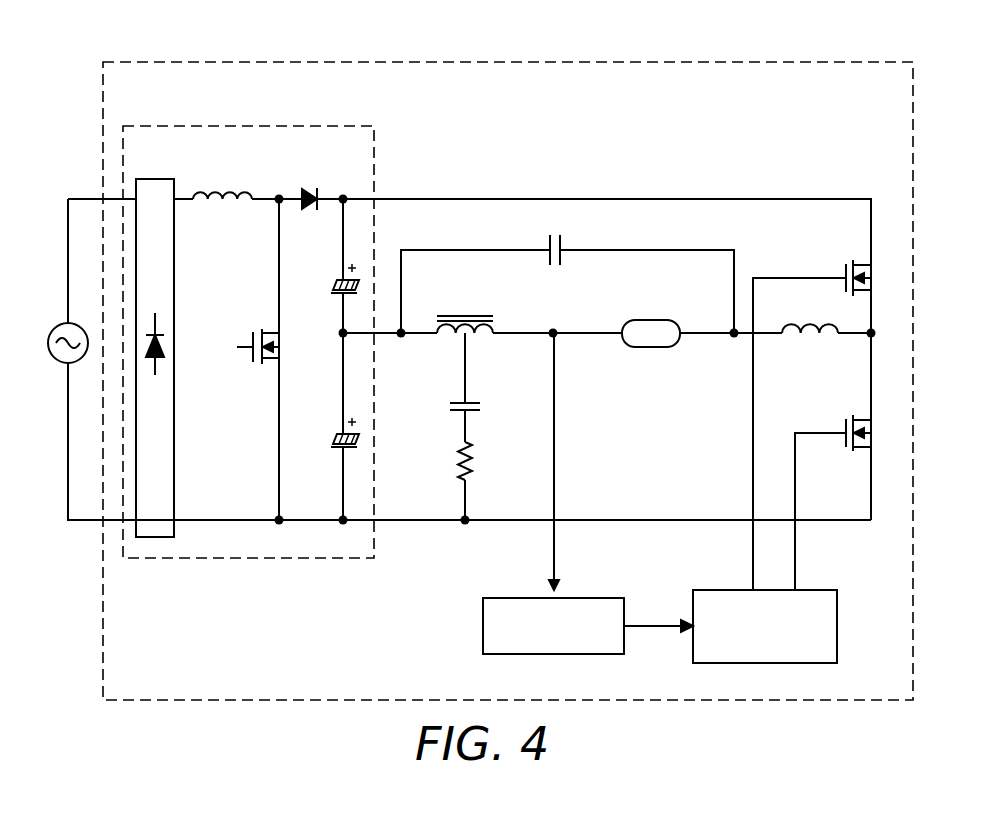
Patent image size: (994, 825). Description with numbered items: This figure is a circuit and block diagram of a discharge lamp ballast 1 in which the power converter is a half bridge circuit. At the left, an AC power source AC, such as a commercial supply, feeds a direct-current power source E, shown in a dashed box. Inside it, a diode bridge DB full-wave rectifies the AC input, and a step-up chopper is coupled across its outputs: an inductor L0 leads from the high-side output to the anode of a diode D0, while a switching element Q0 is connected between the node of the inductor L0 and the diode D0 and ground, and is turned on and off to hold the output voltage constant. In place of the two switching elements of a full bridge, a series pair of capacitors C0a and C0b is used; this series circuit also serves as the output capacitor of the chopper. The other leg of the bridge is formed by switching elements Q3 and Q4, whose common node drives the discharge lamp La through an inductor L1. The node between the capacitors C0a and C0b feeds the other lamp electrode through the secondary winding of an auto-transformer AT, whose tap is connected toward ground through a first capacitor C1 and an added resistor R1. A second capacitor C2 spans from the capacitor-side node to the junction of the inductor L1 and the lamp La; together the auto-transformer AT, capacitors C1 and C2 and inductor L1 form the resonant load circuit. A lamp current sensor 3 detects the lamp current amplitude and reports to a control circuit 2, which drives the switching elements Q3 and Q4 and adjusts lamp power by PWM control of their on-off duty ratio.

The discharge lamp ballast 1 is at (793, 62).
The direct-current power source E is at (302, 126).
The control circuit 2 is at (822, 590).
The lamp current sensor 3 is at (586, 598).
The AC power source AC is at (59, 331).
The diode bridge DB is at (155, 344).
The inductor L0 is at (222, 180).
The diode D0 is at (309, 186).
The switching element Q0 is at (241, 346).
The capacitor C0a is at (325, 274).
The capacitor C0b is at (325, 428).
The auto-transformer AT is at (465, 310).
The first capacitor C1 is at (452, 393).
The resistor R1 is at (446, 461).
The second capacitor C2 is at (551, 264).
The discharge lamp La is at (651, 320).
The inductor L1 is at (810, 315).
The switching element Q3 is at (828, 425).
The switching element Q4 is at (849, 502).